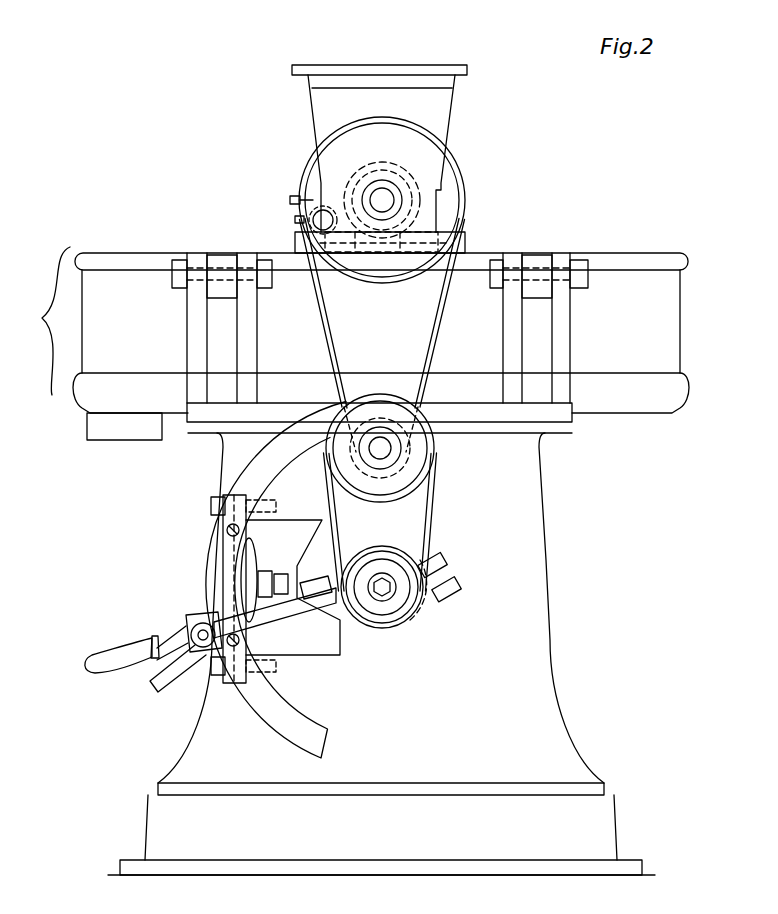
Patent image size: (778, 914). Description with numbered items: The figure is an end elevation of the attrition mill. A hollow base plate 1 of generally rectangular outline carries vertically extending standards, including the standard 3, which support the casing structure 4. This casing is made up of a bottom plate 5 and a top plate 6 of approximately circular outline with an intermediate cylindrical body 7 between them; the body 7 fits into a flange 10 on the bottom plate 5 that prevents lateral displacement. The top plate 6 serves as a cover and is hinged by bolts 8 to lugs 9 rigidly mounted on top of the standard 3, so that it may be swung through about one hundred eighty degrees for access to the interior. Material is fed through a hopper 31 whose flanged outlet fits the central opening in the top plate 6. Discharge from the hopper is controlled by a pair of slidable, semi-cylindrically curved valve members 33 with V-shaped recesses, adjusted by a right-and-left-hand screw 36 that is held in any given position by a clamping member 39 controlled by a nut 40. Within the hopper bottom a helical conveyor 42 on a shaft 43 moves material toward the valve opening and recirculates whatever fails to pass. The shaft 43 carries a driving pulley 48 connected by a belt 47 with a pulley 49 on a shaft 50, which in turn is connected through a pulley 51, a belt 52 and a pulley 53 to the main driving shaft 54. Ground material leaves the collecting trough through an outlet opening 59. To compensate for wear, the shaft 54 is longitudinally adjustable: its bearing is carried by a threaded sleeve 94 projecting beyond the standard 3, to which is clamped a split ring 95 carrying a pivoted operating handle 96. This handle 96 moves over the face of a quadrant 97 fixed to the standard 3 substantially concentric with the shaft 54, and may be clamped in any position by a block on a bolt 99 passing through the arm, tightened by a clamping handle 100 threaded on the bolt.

The hollow base plate 1 is at (165, 815).
The standard 3 is at (540, 487).
The casing structure 4 is at (41, 321).
The bottom plate 5 is at (80, 404).
The top plate 6 is at (109, 256).
The cylindrical body 7 is at (90, 322).
The bolts 8 is at (232, 292).
The lugs 9 is at (242, 352).
The flange 10 is at (86, 374).
The hopper 31 is at (430, 106).
The valve members 33 is at (425, 222).
The right-and-left-hand screw 36 is at (327, 210).
The clamping member 39 is at (295, 218).
The nut 40 is at (294, 197).
The helical conveyor 42 is at (418, 197).
The shaft 43 is at (382, 196).
The belt 47 is at (331, 338).
The driving pulley 48 is at (465, 183).
The pulley 49 is at (388, 426).
The shaft 50 is at (392, 448).
The pulley 51 is at (412, 494).
The belt 52 is at (426, 528).
The pulley 53 is at (430, 606).
The main driving shaft 54 is at (386, 596).
The outlet opening 59 is at (126, 426).
The sleeve 94 is at (378, 548).
The split ring 95 is at (382, 633).
The operating handle 96 is at (110, 650).
The quadrant 97 is at (210, 578).
The bolt 99 is at (192, 626).
The clamping handle 100 is at (168, 672).